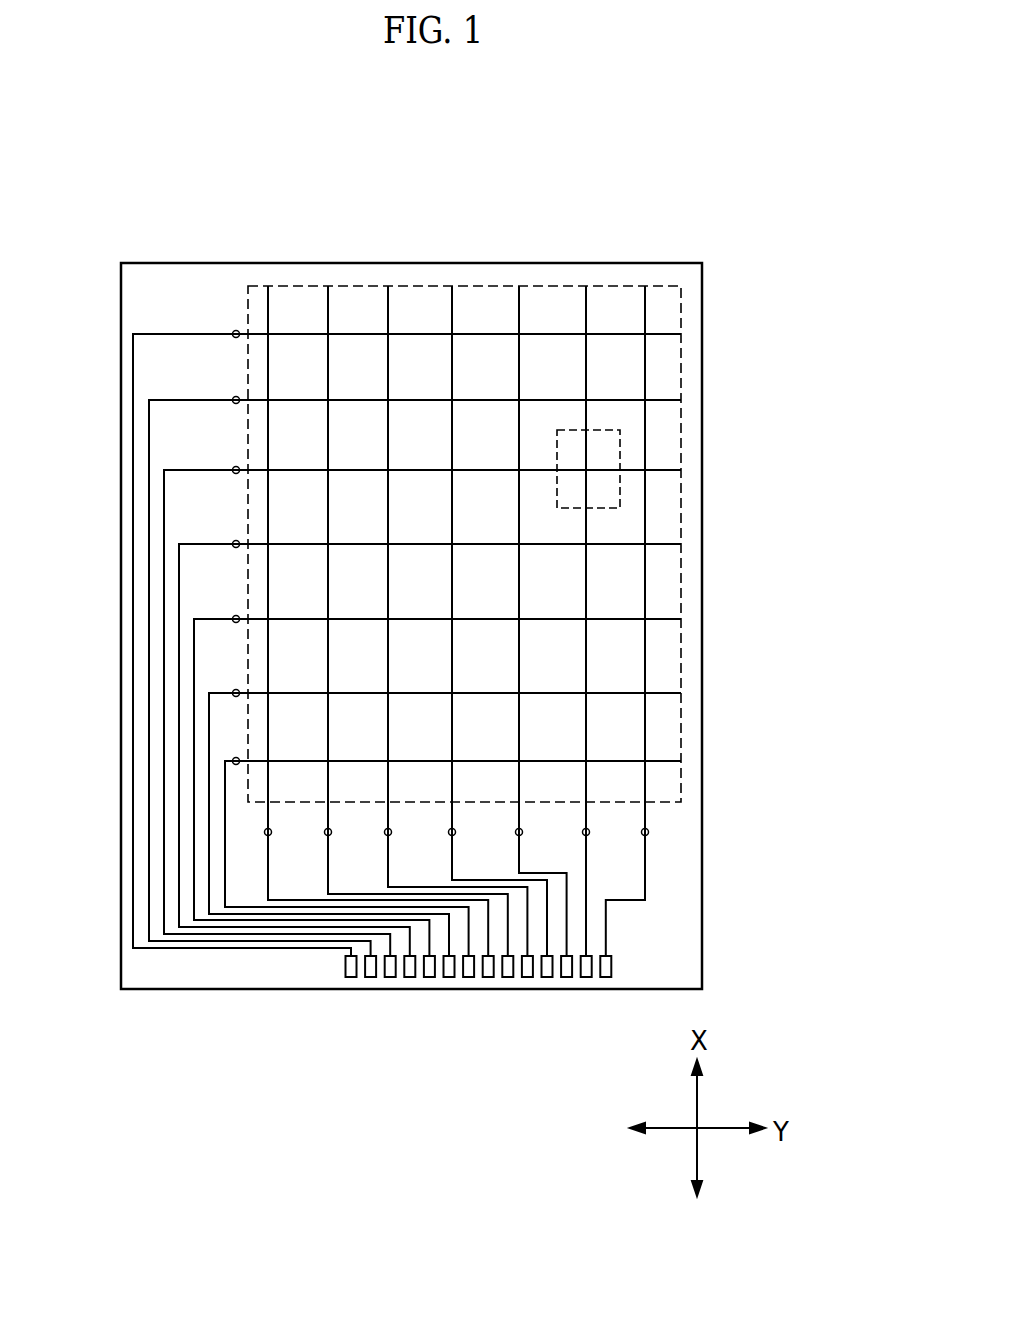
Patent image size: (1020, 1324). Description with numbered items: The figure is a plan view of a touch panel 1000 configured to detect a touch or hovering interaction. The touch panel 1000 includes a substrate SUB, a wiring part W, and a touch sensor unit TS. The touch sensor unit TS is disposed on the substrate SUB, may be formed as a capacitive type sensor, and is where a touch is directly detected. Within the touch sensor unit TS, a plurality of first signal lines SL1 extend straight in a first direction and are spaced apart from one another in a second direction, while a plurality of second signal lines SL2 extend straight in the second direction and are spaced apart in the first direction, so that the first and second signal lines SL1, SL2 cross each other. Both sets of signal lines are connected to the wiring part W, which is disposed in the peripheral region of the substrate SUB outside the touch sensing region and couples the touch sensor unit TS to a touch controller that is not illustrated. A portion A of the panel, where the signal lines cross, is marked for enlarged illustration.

The touch panel 1000 is at (462, 228).
The substrate SUB is at (697, 852).
The touch sensor unit TS is at (682, 637).
The first signal line SL1 is at (645, 445).
The second signal line SL2 is at (622, 547).
The portion A is at (607, 427).
The wiring part W is at (231, 813).